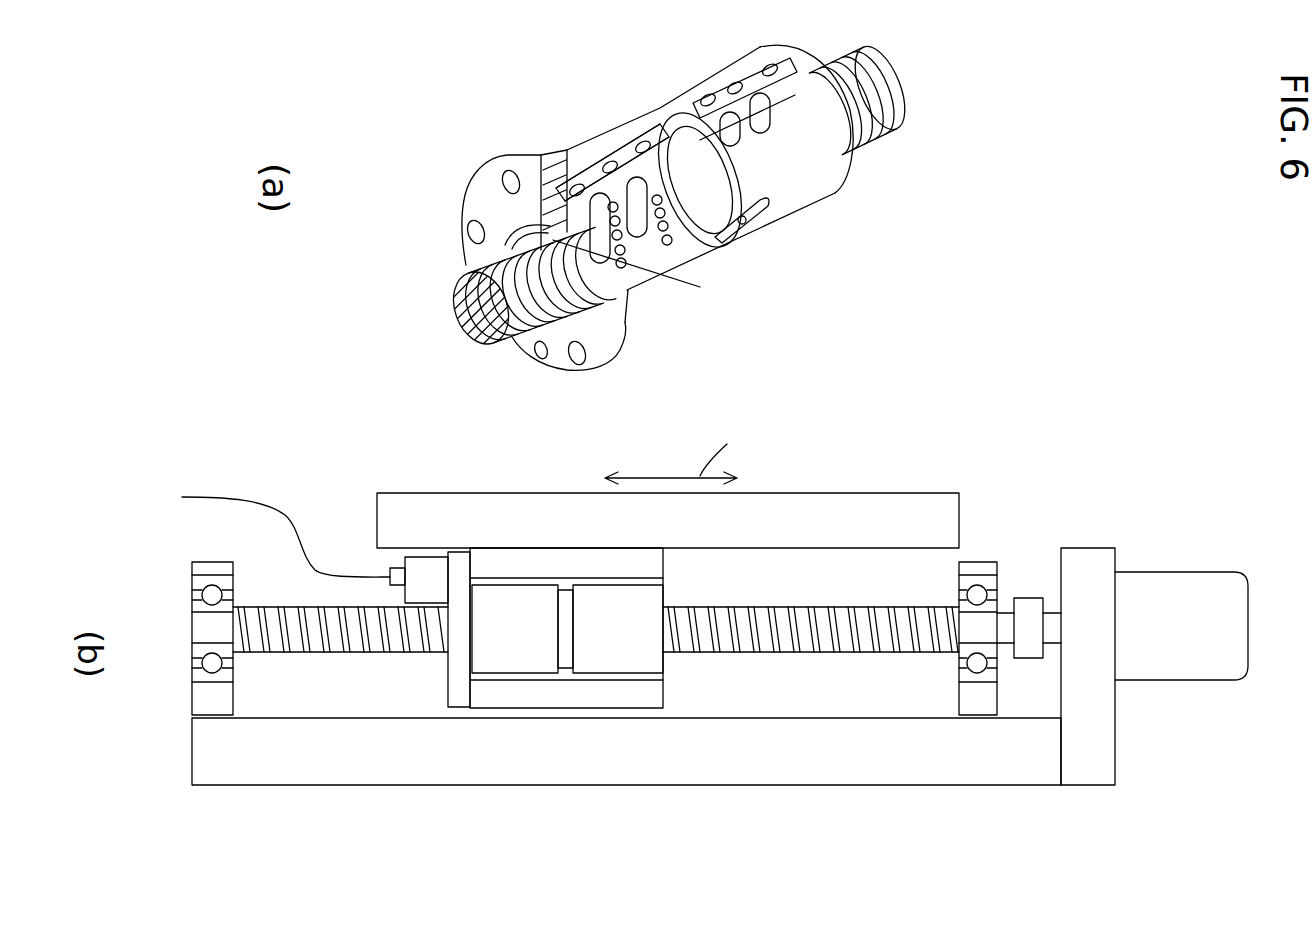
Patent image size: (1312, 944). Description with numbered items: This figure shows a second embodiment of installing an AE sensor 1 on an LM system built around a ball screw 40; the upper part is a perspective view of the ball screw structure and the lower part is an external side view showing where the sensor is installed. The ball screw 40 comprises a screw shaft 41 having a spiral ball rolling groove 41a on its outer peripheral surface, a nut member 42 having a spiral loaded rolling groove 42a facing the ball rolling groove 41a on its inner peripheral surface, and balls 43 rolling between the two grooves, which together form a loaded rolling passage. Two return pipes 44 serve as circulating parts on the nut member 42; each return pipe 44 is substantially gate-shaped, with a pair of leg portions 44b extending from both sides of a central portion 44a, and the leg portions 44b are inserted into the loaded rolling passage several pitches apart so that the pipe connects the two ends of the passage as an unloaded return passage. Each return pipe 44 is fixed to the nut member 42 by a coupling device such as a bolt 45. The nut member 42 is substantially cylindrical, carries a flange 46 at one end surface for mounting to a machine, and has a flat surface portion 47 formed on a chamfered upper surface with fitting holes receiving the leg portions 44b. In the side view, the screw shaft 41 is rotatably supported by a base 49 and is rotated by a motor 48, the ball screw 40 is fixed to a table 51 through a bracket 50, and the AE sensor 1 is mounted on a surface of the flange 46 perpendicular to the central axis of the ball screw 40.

The AE sensor 1 is at (403, 591).
The ball screw 40 is at (834, 257).
The screw shaft 41 is at (870, 53).
The ball rolling groove 41a is at (878, 113).
The nut member 42 is at (842, 178).
The loaded rolling groove 42a is at (622, 293).
The balls 43 is at (600, 192).
The return pipe 44 is at (623, 160).
The central portion 44a is at (610, 157).
The leg portion 44b is at (773, 113).
The bolt 45 is at (612, 140).
The flange 46 is at (522, 160).
The flat surface portion 47 is at (720, 105).
The motor 48 is at (1197, 580).
The base 49 is at (1000, 772).
The bracket 50 is at (657, 563).
The table 51 is at (950, 512).